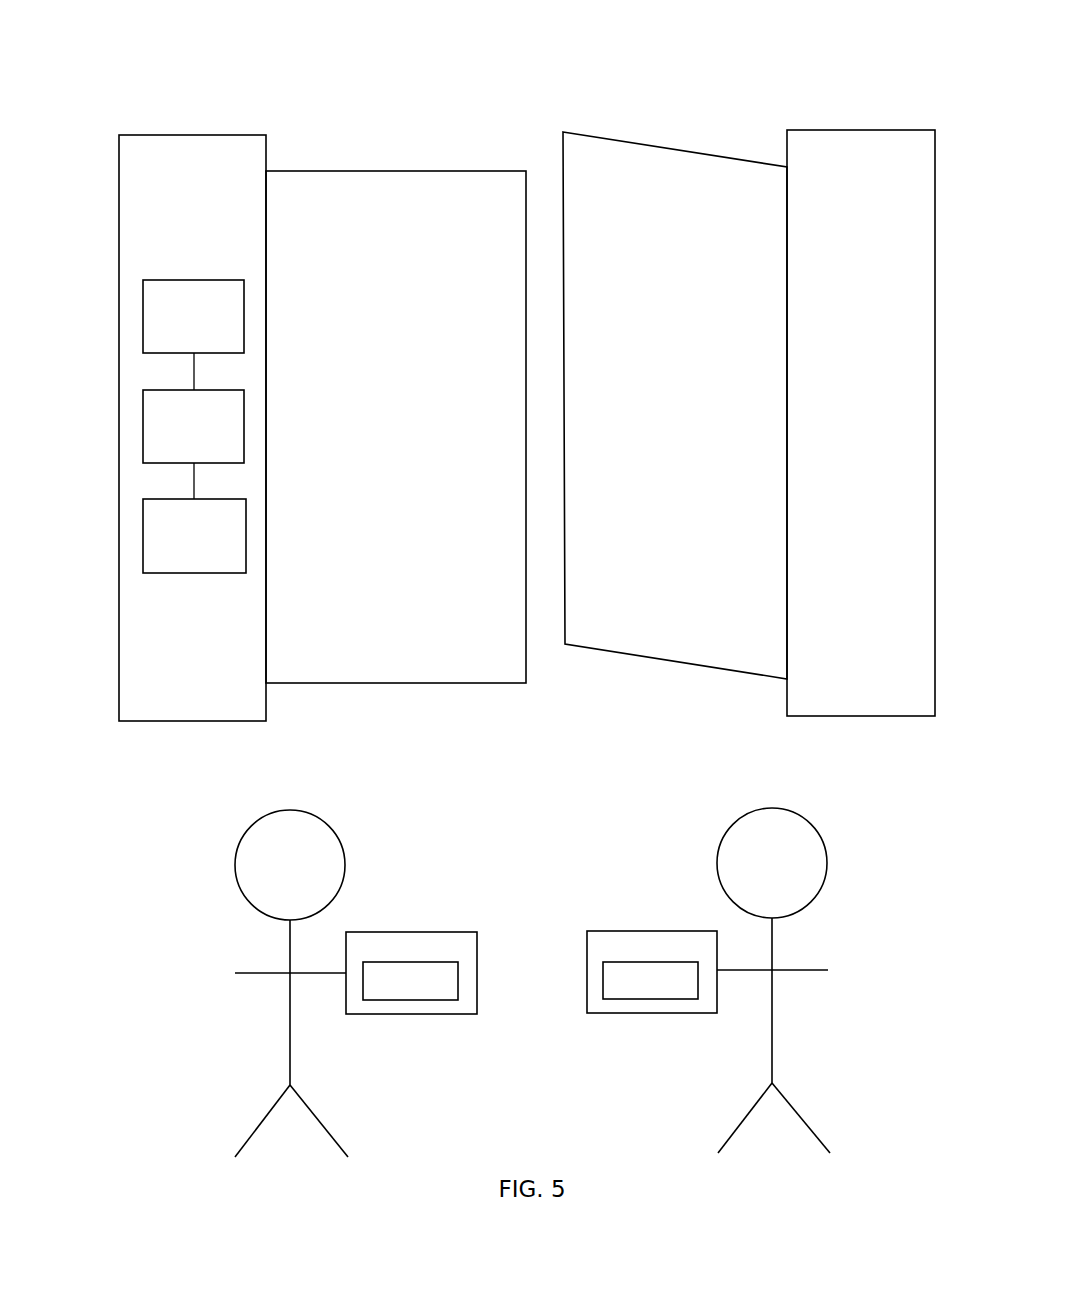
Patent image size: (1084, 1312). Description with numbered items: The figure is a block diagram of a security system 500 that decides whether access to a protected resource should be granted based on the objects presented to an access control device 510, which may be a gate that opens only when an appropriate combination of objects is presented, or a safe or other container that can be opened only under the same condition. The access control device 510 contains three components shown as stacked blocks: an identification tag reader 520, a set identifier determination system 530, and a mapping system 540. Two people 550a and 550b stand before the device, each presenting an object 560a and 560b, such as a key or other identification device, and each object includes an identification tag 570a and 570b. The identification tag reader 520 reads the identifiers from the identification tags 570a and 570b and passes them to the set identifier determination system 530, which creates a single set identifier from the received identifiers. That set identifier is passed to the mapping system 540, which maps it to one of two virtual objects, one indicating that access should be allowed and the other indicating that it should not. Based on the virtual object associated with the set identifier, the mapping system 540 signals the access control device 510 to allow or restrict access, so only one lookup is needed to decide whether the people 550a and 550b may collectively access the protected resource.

The security system 500 is at (503, 32).
The access control device 510 is at (533, 135).
The identification tag reader 520 is at (143, 318).
The set identifier determination system 530 is at (143, 427).
The mapping system 540 is at (143, 537).
The person 550a is at (290, 810).
The person 550b is at (772, 808).
The object 560a is at (410, 932).
The object 560b is at (652, 931).
The identification tag 570a is at (410, 1000).
The identification tag 570b is at (652, 999).